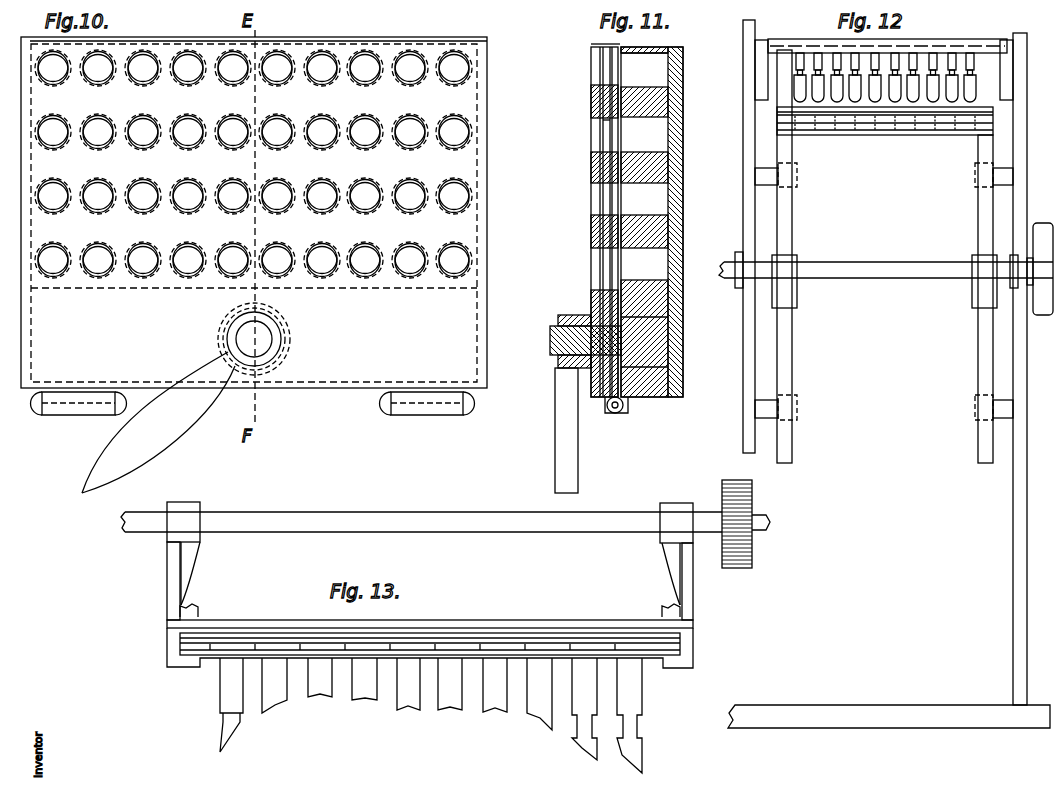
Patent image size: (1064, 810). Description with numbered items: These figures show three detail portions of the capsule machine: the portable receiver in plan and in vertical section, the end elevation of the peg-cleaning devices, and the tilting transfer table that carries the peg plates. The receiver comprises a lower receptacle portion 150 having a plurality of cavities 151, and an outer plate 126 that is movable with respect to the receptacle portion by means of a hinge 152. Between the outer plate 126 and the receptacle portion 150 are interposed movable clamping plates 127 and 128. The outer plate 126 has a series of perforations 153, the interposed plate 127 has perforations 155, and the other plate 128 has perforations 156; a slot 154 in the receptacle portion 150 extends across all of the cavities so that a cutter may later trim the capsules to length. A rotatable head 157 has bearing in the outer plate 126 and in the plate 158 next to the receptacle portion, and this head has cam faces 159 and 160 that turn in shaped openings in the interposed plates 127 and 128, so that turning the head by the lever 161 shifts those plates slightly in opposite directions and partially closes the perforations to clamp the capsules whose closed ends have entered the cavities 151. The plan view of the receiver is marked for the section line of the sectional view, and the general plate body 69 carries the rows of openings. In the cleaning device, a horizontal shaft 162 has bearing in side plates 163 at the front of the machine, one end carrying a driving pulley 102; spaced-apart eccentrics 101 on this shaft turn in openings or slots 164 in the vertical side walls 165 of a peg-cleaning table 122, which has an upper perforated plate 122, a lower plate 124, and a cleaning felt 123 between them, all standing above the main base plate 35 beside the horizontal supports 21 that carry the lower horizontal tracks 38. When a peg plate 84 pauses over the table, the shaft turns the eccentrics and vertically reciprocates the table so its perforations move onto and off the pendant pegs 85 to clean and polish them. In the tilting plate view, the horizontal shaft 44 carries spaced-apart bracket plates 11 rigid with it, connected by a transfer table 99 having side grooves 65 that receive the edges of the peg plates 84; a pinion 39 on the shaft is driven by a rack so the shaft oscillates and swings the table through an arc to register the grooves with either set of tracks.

In FIG. 10, the plate 69 is at (460, 235).
In FIG. 10, the outer plate 126 is at (254, 307).
In FIG. 11, the outer plate 126 is at (593, 100).
In FIG. 10, the rotatable head 157 is at (268, 341).
In FIG. 11, the rotatable head 157 is at (552, 343).
In FIG. 10, the lever 161 is at (158, 422).
In FIG. 11, the lever 161 is at (560, 470).
In FIG. 10, the hinge 152 is at (440, 415).
In FIG. 11, the hinge 152 is at (605, 395).
In FIG. 11, the perforations 153 is at (594, 62).
In FIG. 11, the slot 154 is at (606, 45).
In FIG. 11, the movable clamping plate 127 is at (595, 122).
In FIG. 11, the perforations 155 is at (604, 136).
In FIG. 11, the movable clamping plate 128 is at (604, 212).
In FIG. 11, the cam face 160 is at (593, 300).
In FIG. 11, the receptacle portion 150 is at (668, 230).
In FIG. 11, the plate 158 is at (616, 80).
In FIG. 11, the perforations 156 is at (612, 138).
In FIG. 11, the cavities 151 is at (644, 200).
In FIG. 11, the cam face 159 is at (655, 318).
In FIG. 12, the horizontal supports 21 is at (760, 47).
In FIG. 12, the lower horizontal tracks 38 is at (770, 62).
In FIG. 12, the peg plates 84 is at (798, 42).
In FIG. 13, the peg plates 84 is at (650, 660).
In FIG. 12, the pegs 85 is at (800, 90).
In FIG. 12, the peg-cleaning table 122 is at (830, 112).
In FIG. 12, the cleaning felt 123 is at (886, 117).
In FIG. 12, the lower plate 124 is at (922, 127).
In FIG. 12, the vertical side walls 165 is at (796, 368).
In FIG. 12, the horizontal shaft 162 is at (885, 268).
In FIG. 12, the eccentrics 101 is at (797, 295).
In FIG. 12, the openings or slots 164 is at (782, 220).
In FIG. 12, the driving pulley 102 is at (1040, 308).
In FIG. 12, the side plates 163 is at (1015, 512).
In FIG. 12, the main base plate 35 is at (840, 712).
In FIG. 13, the horizontal shaft 44 is at (548, 527).
In FIG. 13, the pinion 39 is at (725, 492).
In FIG. 13, the transfer table 99 is at (178, 662).
In FIG. 13, the bracket plates 11 is at (185, 568).
In FIG. 13, the side grooves 65 is at (180, 648).